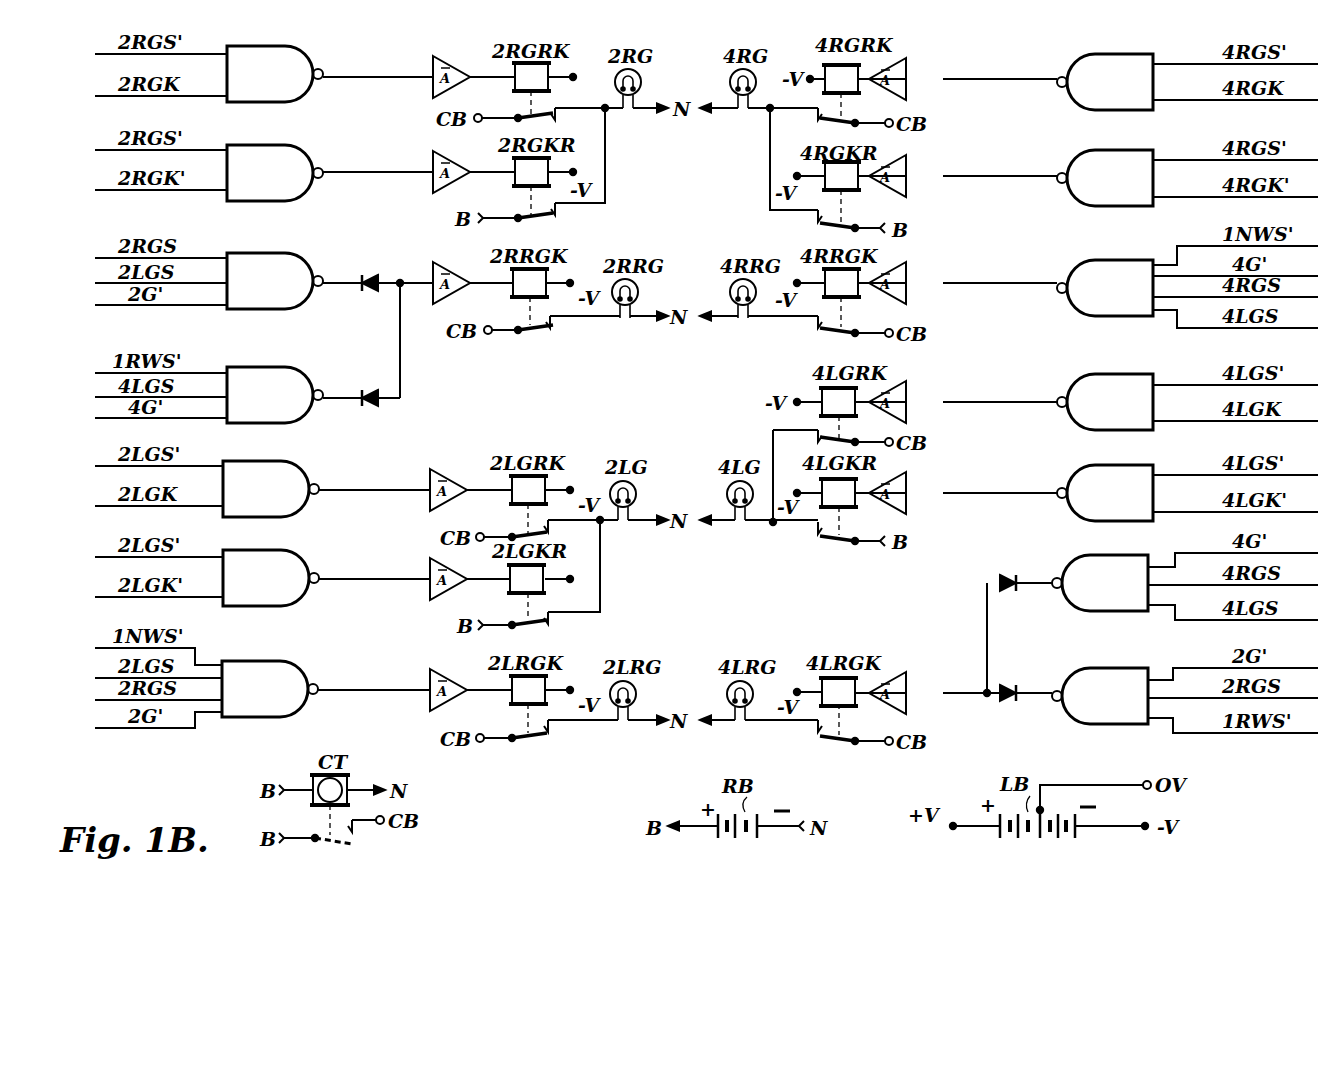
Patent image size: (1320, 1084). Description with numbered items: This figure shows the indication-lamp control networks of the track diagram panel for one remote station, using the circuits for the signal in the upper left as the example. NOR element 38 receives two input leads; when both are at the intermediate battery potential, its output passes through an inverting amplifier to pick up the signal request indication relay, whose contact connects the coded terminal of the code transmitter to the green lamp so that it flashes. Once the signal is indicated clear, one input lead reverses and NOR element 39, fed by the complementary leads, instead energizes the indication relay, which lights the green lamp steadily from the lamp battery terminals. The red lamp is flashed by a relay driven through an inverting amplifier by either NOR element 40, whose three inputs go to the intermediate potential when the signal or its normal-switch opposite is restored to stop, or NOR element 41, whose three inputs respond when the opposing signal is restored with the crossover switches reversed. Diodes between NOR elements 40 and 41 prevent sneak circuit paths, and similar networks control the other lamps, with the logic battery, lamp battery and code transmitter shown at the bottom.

The NOR element 38 is at (275, 74).
The NOR element 39 is at (275, 173).
The NOR element 40 is at (275, 281).
The NOR element 41 is at (275, 395).